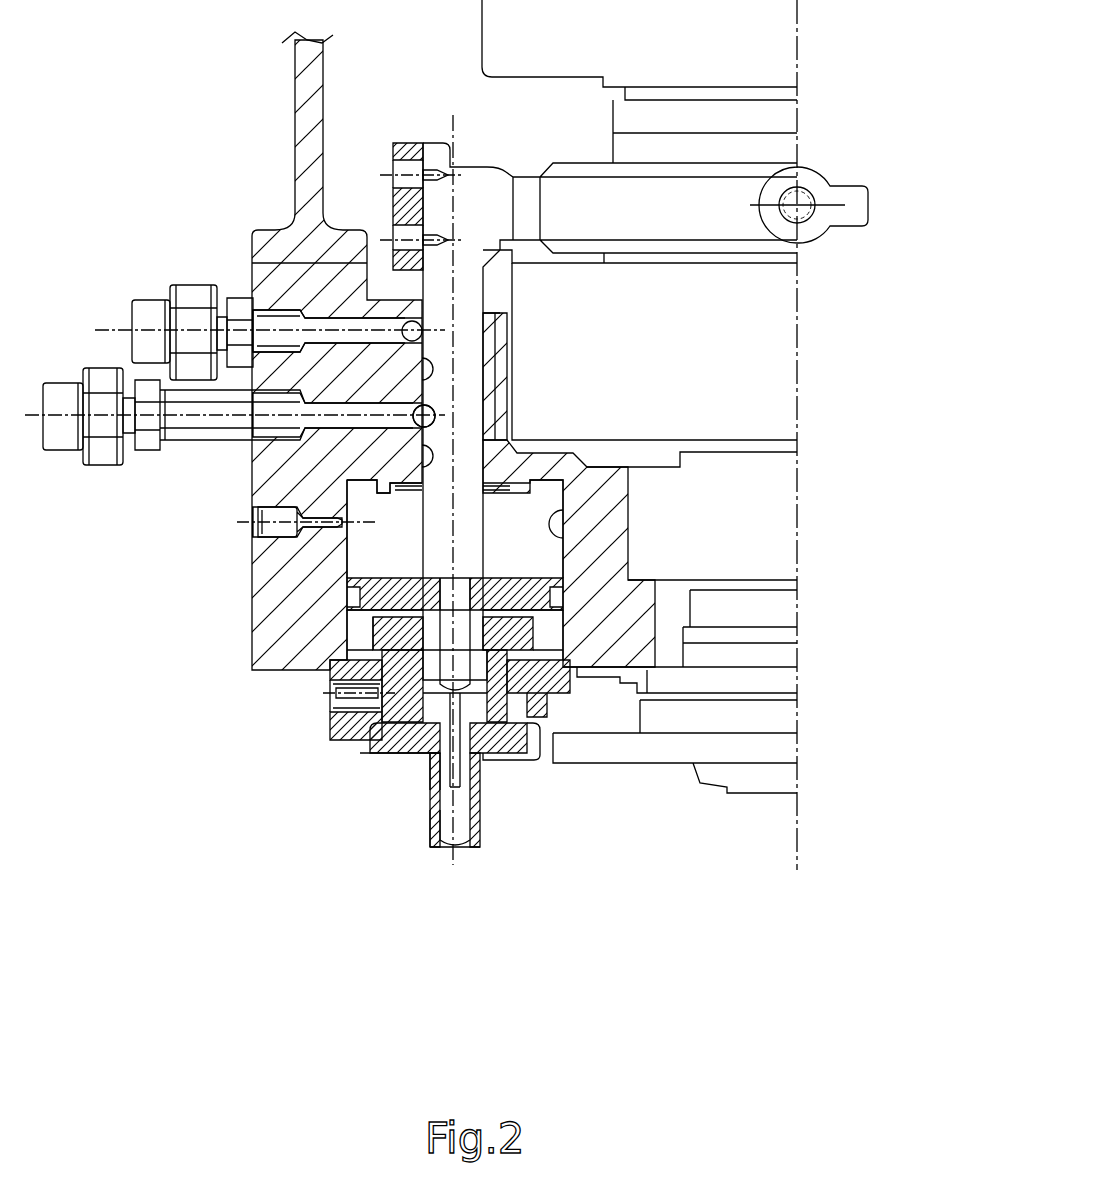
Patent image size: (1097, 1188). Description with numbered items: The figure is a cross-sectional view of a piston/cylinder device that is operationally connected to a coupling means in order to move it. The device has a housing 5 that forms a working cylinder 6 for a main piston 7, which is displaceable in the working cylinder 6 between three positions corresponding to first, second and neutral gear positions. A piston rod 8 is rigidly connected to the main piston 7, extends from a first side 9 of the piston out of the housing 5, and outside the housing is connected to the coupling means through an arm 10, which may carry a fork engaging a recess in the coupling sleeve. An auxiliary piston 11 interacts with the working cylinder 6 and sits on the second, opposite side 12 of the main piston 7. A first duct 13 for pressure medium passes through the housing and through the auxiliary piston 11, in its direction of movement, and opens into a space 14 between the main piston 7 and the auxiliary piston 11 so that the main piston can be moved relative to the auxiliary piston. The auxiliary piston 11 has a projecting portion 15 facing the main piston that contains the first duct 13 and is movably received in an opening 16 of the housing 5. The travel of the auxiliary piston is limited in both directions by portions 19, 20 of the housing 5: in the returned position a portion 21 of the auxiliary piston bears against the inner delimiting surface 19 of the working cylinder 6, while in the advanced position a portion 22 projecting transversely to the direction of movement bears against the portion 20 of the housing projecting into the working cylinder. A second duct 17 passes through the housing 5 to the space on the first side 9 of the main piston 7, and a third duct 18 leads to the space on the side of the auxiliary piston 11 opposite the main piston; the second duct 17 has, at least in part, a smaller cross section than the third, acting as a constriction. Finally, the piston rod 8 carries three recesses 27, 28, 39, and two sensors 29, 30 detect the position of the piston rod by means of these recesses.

The housing 5 is at (297, 568).
The working cylinder 6 is at (550, 512).
The main piston 7 is at (595, 585).
The piston rod 8 is at (437, 150).
The first side 9 is at (520, 568).
The arm 10 is at (567, 207).
The auxiliary piston 11 is at (385, 630).
The second side 12 is at (365, 598).
The first duct 13 is at (430, 803).
The space 14 is at (430, 693).
The projecting portion 15 is at (427, 767).
The opening 16 is at (428, 838).
The second duct 17 is at (257, 527).
The third duct 18 is at (353, 690).
The inner delimiting surface 19 is at (523, 763).
The housing portion projecting into the working cylinder 20 is at (325, 693).
The portion of the auxiliary piston 21 is at (485, 760).
The transversely projecting portion 22 is at (367, 740).
The recess 27 is at (433, 367).
The recess 28 is at (433, 457).
The sensor 29 is at (108, 484).
The sensor 30 is at (148, 272).
The recess 39 is at (435, 414).